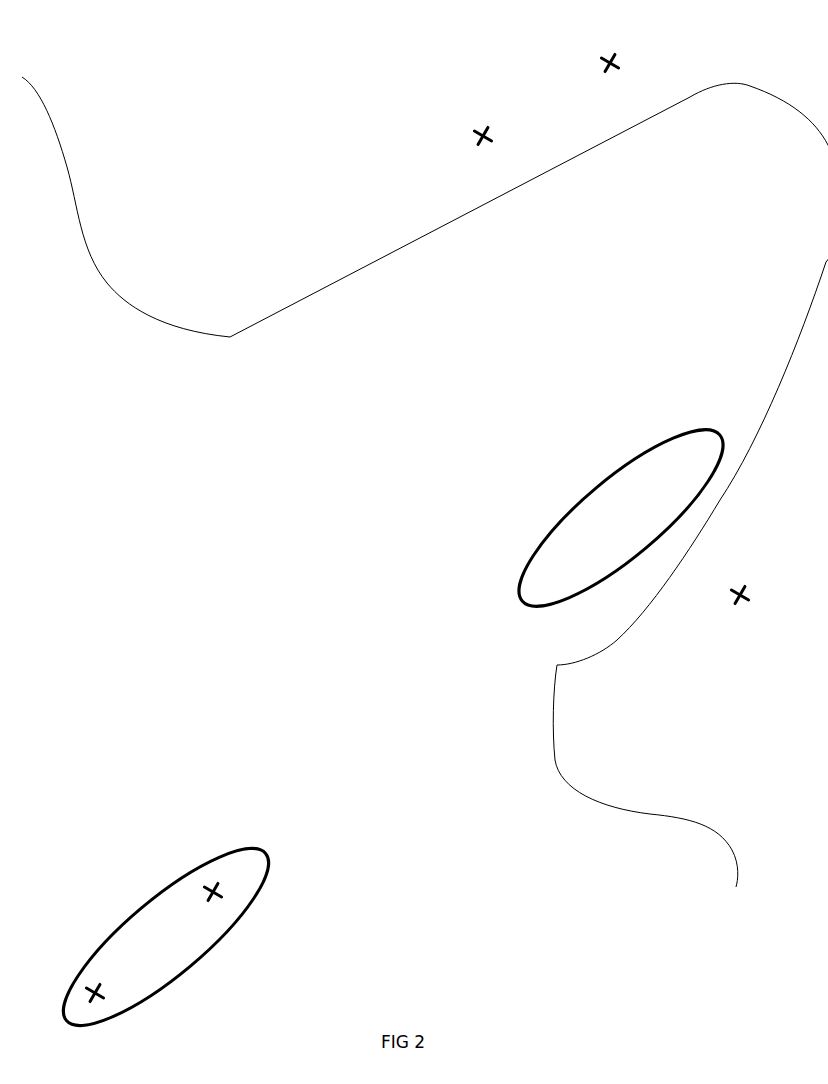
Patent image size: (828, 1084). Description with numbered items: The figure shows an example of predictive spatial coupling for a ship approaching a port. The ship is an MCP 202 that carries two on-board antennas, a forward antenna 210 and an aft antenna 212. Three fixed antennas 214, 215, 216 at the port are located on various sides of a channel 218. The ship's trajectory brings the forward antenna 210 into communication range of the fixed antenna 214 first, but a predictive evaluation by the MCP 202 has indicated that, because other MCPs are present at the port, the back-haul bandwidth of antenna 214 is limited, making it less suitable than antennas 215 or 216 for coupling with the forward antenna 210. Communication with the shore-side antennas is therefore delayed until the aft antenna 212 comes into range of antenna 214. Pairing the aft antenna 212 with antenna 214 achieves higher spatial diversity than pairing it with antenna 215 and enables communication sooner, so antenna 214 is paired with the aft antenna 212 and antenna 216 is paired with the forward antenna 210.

The MCP 202 is at (230, 935).
The forward antenna 210 is at (83, 990).
The aft antenna 212 is at (198, 883).
The fixed antenna 214 is at (756, 583).
The fixed antenna 215 is at (623, 53).
The fixed antenna 216 is at (498, 124).
The channel 218 is at (586, 308).